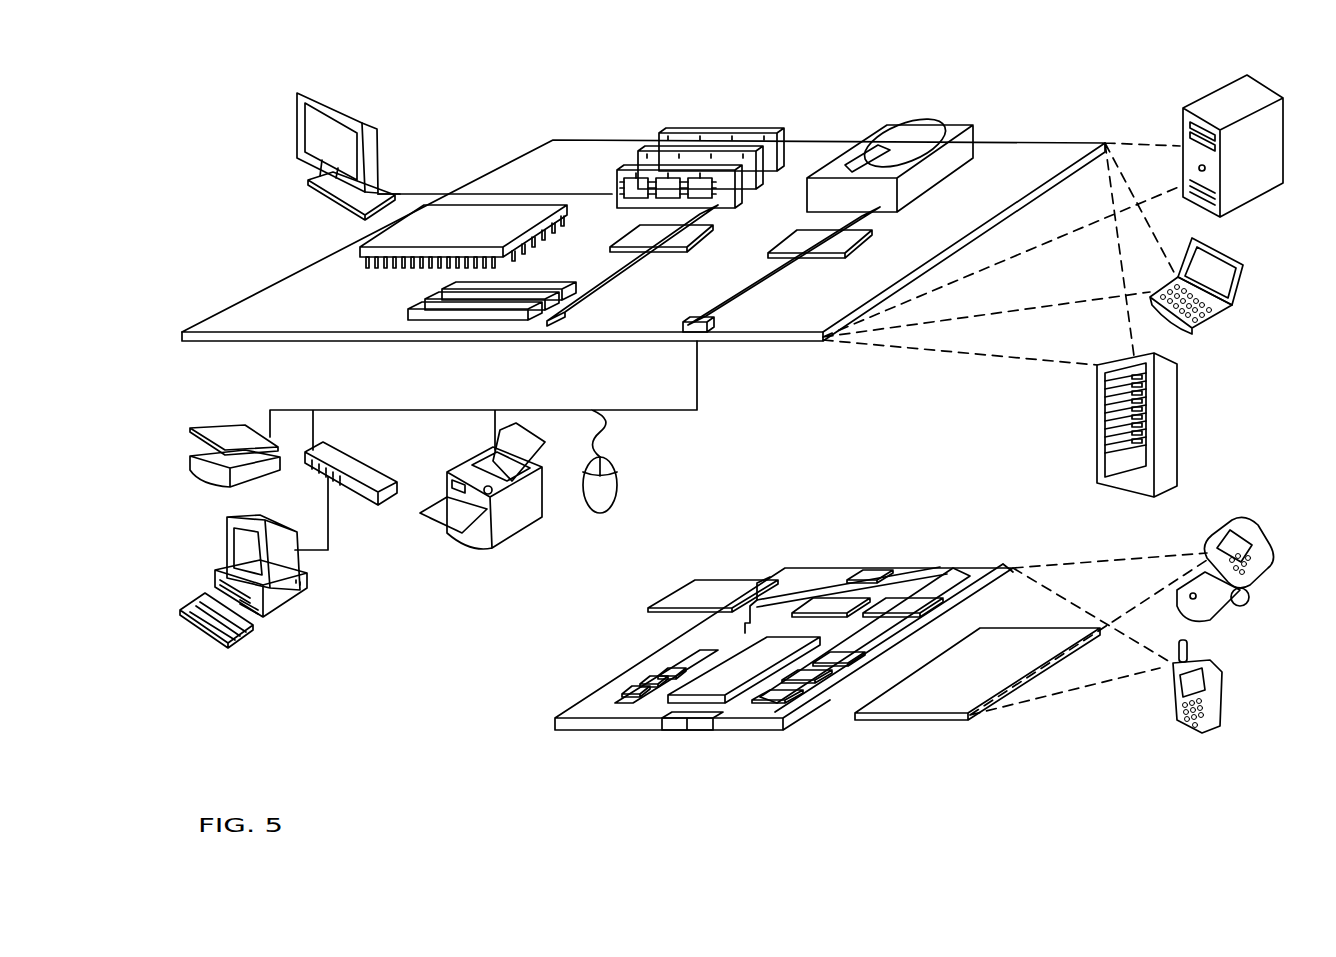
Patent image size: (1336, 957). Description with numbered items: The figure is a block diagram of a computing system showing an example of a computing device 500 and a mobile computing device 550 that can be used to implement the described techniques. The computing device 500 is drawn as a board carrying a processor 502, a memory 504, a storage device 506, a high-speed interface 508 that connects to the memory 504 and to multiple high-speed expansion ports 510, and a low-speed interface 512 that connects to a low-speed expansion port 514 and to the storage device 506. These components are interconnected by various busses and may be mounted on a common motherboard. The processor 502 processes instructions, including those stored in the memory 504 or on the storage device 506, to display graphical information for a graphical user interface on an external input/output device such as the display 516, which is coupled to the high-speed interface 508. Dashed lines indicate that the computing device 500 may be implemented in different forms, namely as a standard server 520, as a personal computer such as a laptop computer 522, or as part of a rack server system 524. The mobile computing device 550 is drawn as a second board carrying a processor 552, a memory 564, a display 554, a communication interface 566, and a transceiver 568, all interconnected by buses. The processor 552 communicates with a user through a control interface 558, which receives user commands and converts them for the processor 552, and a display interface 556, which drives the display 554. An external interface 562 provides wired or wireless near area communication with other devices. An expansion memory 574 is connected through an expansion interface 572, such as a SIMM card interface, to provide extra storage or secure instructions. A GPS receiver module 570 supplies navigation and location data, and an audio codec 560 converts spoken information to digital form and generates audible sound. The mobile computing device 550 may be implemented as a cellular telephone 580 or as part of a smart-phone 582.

The computing device 500 is at (479, 114).
The processor 502 is at (360, 251).
The memory 504 is at (662, 136).
The storage device 506 is at (892, 122).
The high-speed interface 508 is at (640, 237).
The high-speed expansion ports 510 is at (433, 306).
The low-speed interface 512 is at (800, 240).
The low-speed expansion port 514 is at (697, 331).
The display 516 is at (300, 93).
The standard server 520 is at (1183, 127).
The laptop computer 522 is at (1198, 330).
The rack server system 524 is at (1097, 447).
The mobile computing device 550 is at (530, 731).
The processor 552 is at (720, 690).
The display 554 is at (940, 704).
The display interface 556 is at (787, 695).
The control interface 558 is at (812, 675).
The audio codec 560 is at (840, 658).
The external interface 562 is at (687, 718).
The memory 564 is at (628, 688).
The communication interface 566 is at (833, 604).
The transceiver 568 is at (903, 602).
The GPS receiver module 570 is at (877, 578).
The expansion interface 572 is at (770, 577).
The expansion memory 574 is at (698, 581).
The cellular telephone 580 is at (1212, 528).
The smart-phone 582 is at (1170, 695).